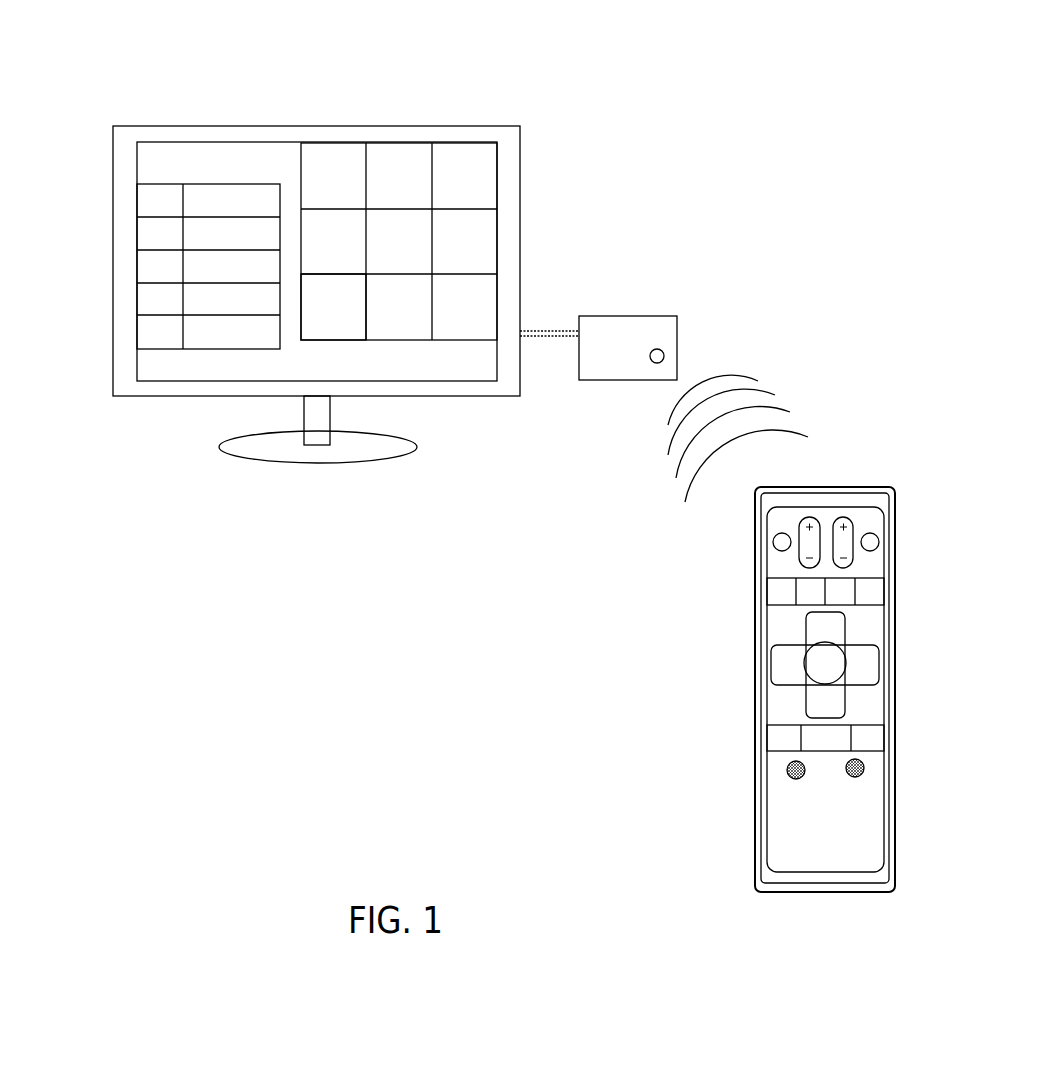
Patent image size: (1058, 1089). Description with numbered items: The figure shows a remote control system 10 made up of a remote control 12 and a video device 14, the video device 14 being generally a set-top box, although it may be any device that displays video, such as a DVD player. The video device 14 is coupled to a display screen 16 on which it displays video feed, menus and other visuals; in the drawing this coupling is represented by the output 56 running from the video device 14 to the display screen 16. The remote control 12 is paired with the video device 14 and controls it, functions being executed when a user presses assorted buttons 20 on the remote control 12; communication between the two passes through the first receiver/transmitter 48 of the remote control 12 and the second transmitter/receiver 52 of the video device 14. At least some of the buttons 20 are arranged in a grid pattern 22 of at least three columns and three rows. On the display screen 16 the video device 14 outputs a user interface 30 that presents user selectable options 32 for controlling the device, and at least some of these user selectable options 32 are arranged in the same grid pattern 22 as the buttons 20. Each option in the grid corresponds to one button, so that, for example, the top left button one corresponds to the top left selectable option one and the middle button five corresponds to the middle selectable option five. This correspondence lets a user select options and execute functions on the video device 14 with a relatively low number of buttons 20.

The remote control system 10 is at (522, 57).
The remote control 12 is at (802, 661).
The video device 14 is at (618, 316).
The display screen 16 is at (284, 128).
The buttons 20 is at (863, 655).
The grid pattern 22 is at (487, 232).
The user interface 30 is at (145, 278).
The user selectable options 32 is at (331, 343).
The first receiver/transmitter 48 is at (860, 487).
The second transmitter/receiver 52 is at (664, 351).
The output 56 is at (550, 337).